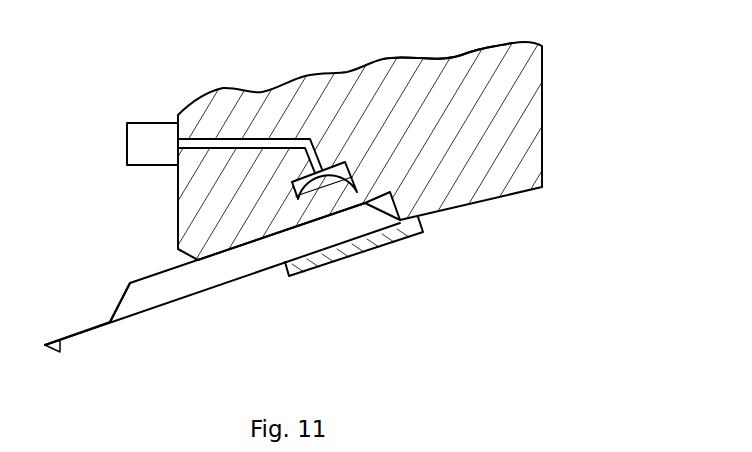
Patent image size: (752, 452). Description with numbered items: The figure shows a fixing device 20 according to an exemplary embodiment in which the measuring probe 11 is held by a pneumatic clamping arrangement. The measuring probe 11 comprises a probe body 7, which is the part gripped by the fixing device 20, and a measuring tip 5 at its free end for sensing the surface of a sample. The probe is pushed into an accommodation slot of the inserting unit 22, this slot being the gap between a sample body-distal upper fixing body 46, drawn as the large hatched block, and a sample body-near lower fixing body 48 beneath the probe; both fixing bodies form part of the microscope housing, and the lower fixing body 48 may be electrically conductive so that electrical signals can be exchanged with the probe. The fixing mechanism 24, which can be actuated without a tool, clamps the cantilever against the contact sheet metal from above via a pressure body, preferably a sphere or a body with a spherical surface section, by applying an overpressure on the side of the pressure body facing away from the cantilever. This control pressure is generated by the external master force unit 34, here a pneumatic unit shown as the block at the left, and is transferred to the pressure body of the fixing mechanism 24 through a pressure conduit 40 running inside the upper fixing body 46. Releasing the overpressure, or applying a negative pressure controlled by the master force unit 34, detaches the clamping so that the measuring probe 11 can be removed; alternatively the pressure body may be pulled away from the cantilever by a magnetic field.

The fixing device 20 is at (557, 63).
The upper fixing body 46 is at (470, 72).
The fixing mechanism 24 is at (222, 146).
The pressure conduit 40 is at (215, 157).
The master force unit 34 is at (150, 122).
The inserting unit 22 is at (260, 223).
The lower fixing body 48 is at (372, 244).
The probe body 7 is at (168, 292).
The measuring probe 11 is at (117, 291).
The measuring tip 5 is at (62, 350).